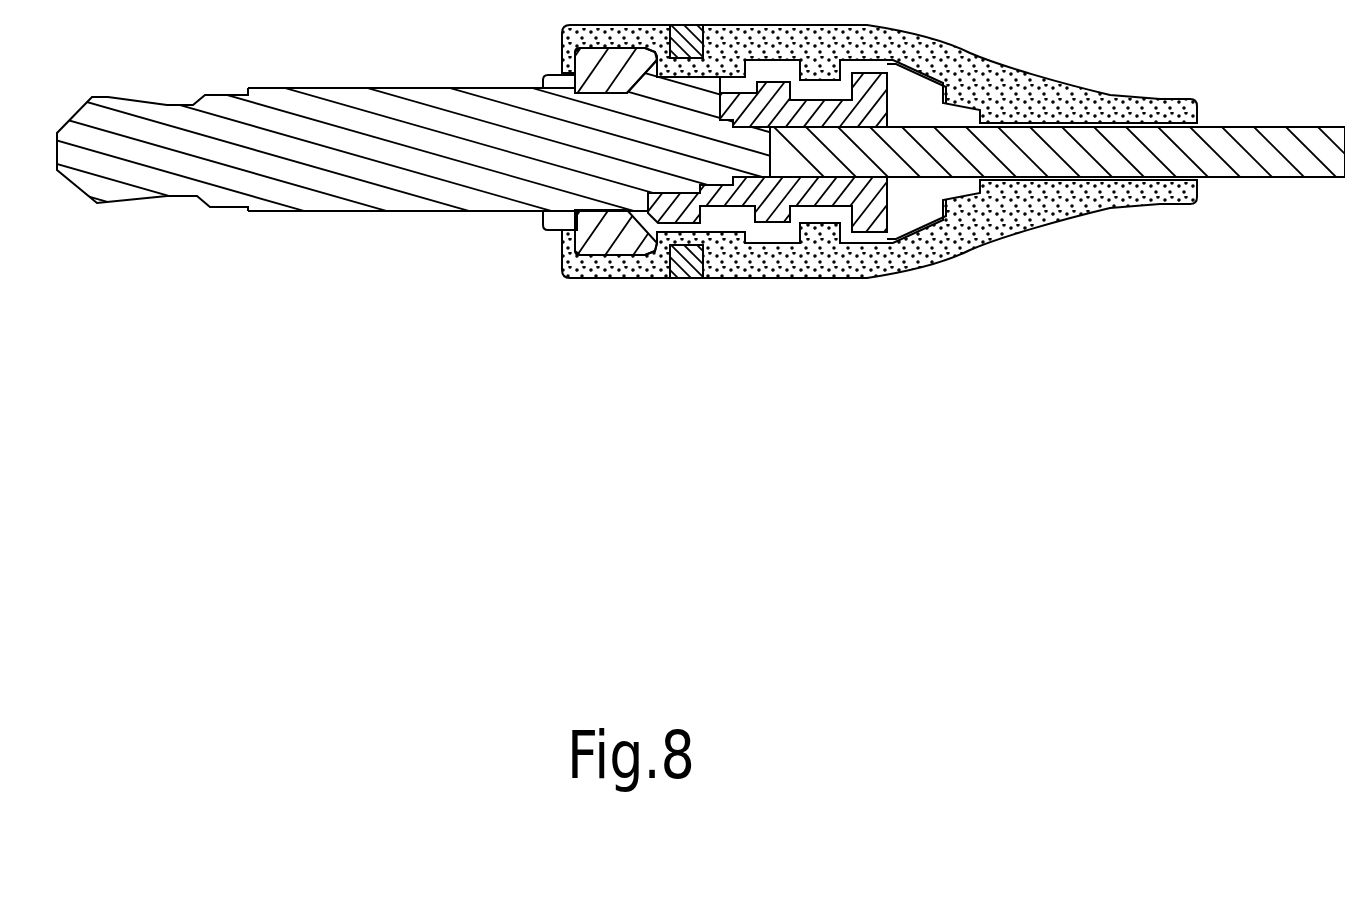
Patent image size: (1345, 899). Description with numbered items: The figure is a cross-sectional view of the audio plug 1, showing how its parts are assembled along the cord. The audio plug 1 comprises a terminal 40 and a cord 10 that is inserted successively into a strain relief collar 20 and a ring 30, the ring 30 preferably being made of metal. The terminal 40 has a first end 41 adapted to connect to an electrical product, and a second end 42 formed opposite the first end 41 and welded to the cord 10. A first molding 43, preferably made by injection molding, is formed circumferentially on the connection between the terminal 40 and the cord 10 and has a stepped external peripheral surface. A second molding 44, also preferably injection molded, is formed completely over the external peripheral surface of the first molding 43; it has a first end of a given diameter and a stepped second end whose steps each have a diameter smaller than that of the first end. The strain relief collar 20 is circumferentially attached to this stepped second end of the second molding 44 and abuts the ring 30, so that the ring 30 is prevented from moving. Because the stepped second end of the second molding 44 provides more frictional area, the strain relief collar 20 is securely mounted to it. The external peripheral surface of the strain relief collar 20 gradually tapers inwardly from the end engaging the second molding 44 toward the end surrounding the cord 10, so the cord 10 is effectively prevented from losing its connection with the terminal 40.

The audio plug 1 is at (946, 492).
The cord 10 is at (1297, 153).
The strain relief collar 20 is at (1037, 215).
The ring 30 is at (686, 280).
The terminal 40 is at (385, 153).
The first end 41 is at (122, 153).
The second end 42 is at (748, 158).
The first molding 43 is at (620, 232).
The second molding 44 is at (567, 255).